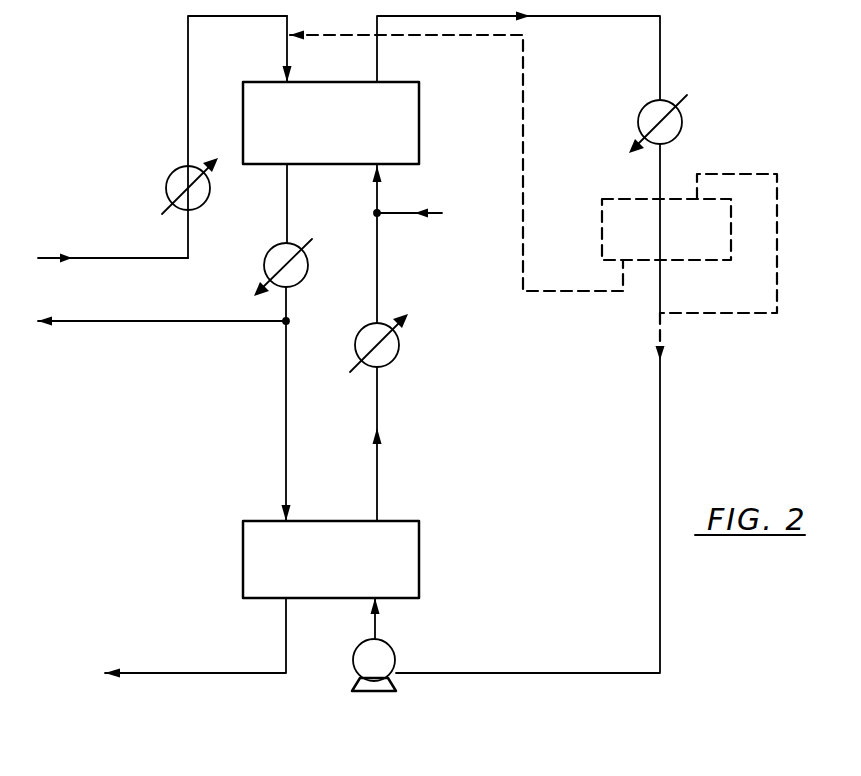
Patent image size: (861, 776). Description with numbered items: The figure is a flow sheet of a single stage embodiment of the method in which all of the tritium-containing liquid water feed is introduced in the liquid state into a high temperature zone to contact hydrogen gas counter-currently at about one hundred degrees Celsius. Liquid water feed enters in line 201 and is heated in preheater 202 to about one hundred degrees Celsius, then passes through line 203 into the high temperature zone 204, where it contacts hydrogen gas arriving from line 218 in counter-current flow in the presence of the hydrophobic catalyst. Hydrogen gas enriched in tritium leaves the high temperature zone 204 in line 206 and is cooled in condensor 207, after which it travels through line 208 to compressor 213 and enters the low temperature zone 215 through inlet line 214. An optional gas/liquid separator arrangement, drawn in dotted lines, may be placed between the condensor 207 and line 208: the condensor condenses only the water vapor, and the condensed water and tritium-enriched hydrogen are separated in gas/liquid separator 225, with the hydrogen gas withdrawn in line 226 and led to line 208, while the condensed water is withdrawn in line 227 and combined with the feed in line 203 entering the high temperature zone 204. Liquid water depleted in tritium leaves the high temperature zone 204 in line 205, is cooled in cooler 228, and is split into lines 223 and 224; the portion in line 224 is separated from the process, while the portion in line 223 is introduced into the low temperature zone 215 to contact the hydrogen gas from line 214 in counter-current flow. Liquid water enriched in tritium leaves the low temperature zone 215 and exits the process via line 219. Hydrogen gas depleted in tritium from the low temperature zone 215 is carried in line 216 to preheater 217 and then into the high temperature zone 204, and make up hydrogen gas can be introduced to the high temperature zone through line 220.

The line 201 is at (131, 256).
The preheater 202 is at (168, 172).
The line 203 is at (187, 93).
The high temperature zone 204 is at (266, 80).
The line 205 is at (286, 212).
The line 206 is at (660, 58).
The condensor 207 is at (683, 120).
The line 208 is at (658, 452).
The compressor 213 is at (388, 661).
The inlet line 214 is at (378, 629).
The low temperature zone 215 is at (243, 540).
The line 216 is at (380, 478).
The preheater 217 is at (396, 365).
The line 218 is at (377, 278).
The line 219 is at (239, 672).
The line 220 is at (438, 212).
The line 223 is at (285, 433).
The line 224 is at (150, 323).
The gas/liquid separator 225 is at (690, 198).
The line 226 is at (777, 173).
The line 227 is at (525, 70).
The cooler 228 is at (262, 268).